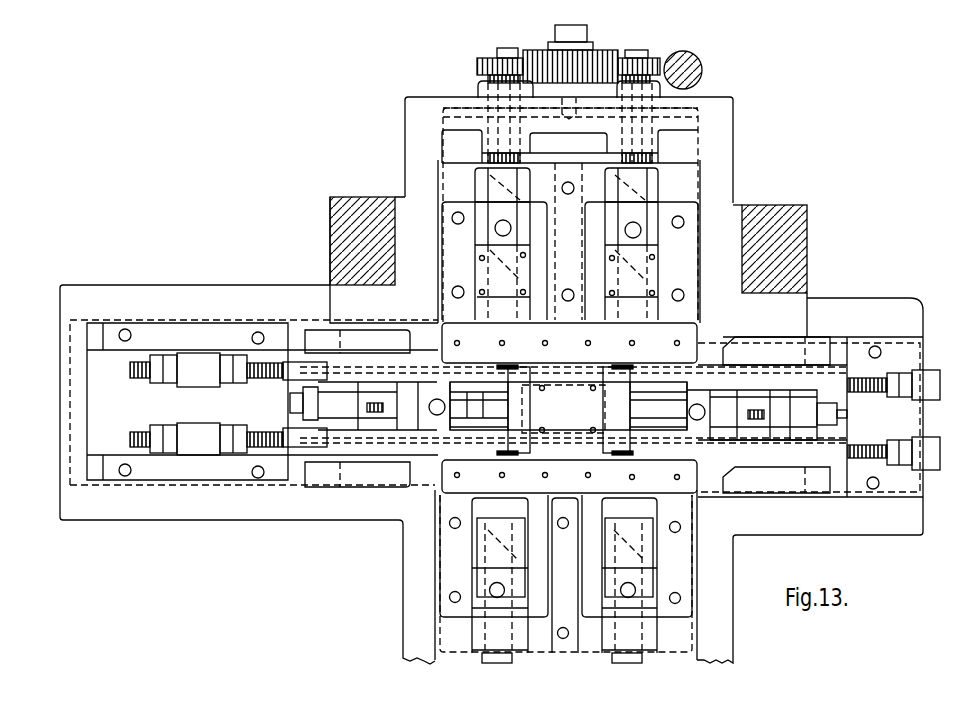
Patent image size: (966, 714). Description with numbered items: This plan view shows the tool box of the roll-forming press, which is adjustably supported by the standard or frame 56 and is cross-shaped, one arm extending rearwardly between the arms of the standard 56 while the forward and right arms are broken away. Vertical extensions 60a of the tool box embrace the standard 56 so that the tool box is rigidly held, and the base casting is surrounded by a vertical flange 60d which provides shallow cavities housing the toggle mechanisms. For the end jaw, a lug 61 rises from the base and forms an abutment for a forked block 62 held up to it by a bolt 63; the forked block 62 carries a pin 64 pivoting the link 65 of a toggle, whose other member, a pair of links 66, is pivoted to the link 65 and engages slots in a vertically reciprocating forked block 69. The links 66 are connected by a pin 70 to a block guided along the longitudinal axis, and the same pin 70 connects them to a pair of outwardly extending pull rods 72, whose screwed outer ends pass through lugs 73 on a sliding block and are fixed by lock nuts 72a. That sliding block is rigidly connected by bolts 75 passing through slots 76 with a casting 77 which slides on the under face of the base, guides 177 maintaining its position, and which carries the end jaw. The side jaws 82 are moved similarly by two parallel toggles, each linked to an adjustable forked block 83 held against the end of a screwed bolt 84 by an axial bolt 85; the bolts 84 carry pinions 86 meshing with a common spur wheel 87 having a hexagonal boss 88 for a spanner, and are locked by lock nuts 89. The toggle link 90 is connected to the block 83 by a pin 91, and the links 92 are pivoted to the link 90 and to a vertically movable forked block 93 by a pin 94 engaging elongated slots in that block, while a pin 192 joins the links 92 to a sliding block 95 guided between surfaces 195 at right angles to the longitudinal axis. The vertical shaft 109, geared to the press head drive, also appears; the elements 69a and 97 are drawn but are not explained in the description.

The standard or frame 56 is at (330, 243).
The vertical extension of tool box 60a is at (880, 286).
The vertical flange 60d is at (747, 560).
The lug 61 is at (310, 418).
The forked block 62 is at (350, 470).
The bolt 63 is at (290, 403).
The pin 64 is at (418, 330).
The link 65 is at (460, 402).
The links 66 is at (438, 330).
The vertically reciprocating forked block 69 is at (437, 455).
The pivot pin 69a is at (441, 399).
The pin 70 is at (519, 400).
The pull rods 72 is at (140, 432).
The lock nuts 72a is at (232, 355).
The lugs 73 is at (198, 393).
The bolts 75 is at (124, 329).
The slots 76 is at (96, 323).
The casting 77 is at (70, 389).
The side jaws 82 is at (400, 330).
The adjustable forked block 83 is at (614, 161).
The screwed bolt 84 is at (628, 130).
The axially arranged bolt 85 is at (507, 50).
The pinions 86 is at (478, 64).
The spur wheel 87 is at (596, 62).
The hexagonal boss 88 is at (586, 46).
The lock nuts 89 is at (478, 88).
The link 90 is at (520, 178).
The pin 91 is at (526, 204).
The links 92 is at (490, 200).
The vertically movable forked block 93 is at (495, 235).
The pin 94 is at (525, 233).
The sliding block 95 is at (505, 312).
The pin 97 is at (495, 226).
The vertical shaft 109 is at (702, 71).
The guides 177 is at (70, 322).
The pin 192 is at (696, 284).
The guiding surfaces 195 is at (658, 311).